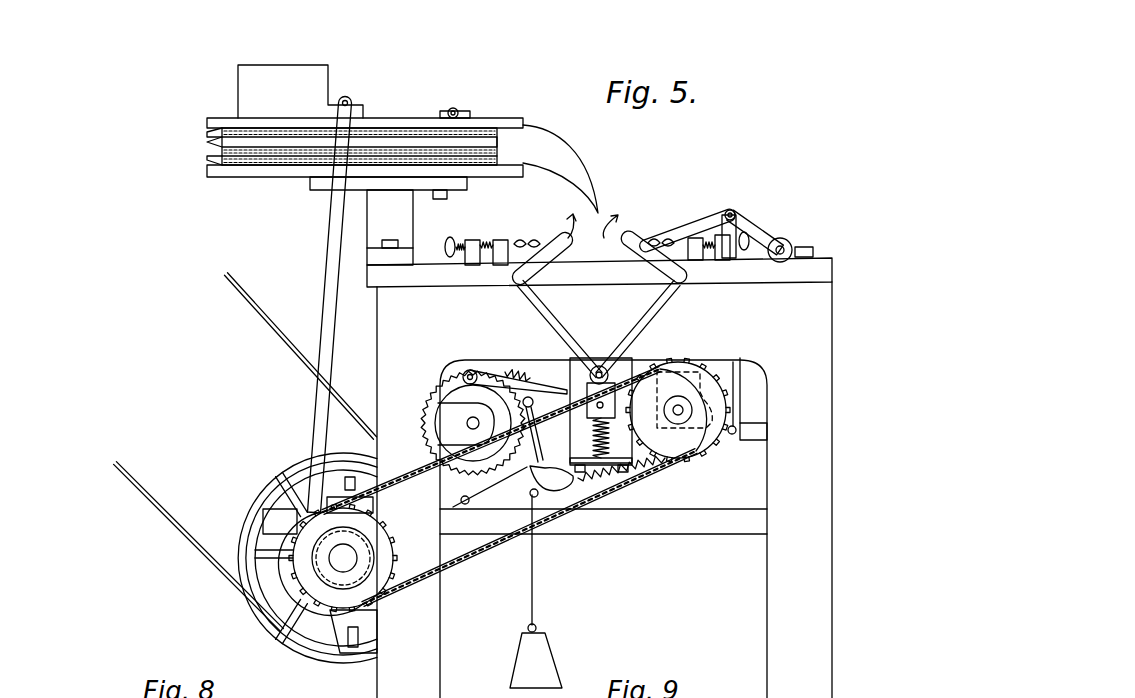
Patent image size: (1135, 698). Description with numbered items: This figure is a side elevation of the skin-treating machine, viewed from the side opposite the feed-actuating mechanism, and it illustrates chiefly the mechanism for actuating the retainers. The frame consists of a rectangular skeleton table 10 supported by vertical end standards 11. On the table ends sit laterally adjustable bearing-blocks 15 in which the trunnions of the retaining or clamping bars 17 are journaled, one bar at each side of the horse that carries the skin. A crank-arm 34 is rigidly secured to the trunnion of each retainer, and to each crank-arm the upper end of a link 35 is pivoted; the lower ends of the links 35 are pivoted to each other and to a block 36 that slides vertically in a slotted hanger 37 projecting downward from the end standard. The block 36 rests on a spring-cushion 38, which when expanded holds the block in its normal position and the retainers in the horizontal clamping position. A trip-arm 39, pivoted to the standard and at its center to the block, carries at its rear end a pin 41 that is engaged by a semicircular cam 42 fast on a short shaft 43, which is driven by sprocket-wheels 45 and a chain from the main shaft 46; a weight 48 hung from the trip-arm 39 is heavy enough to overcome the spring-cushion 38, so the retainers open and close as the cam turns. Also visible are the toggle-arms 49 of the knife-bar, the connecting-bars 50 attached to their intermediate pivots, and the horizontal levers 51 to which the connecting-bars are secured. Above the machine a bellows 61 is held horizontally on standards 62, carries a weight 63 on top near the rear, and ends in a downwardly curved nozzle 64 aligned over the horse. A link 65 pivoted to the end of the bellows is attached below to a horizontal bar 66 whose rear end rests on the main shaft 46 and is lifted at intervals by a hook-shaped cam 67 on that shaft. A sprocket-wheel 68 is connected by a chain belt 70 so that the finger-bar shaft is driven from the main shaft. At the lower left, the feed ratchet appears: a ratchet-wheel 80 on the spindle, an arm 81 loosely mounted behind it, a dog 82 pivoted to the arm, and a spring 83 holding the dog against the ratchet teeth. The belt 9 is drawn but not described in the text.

The belt 9 is at (295, 680).
The table 10 is at (599, 272).
The end standard 11 is at (604, 490).
The bearing-block 15 is at (597, 249).
The retaining or clamping bar 17 is at (594, 226).
The crank-arm 34 is at (599, 257).
The link 35 is at (552, 323).
The block 36 is at (601, 415).
The slotted hanger 37 is at (589, 377).
The spring-cushion 38 is at (592, 441).
The trip-arm 39 is at (518, 386).
The pin 41 is at (472, 371).
The semicircular cam 42 is at (466, 416).
The short shaft 43 is at (468, 423).
The sprocket-wheel 45 is at (473, 423).
The main shaft 46 is at (347, 556).
The weight 48 is at (536, 656).
The toggle-arm 49 is at (753, 228).
The connecting-bar 50 is at (738, 405).
The horizontal lever 51 is at (753, 431).
The bellows 61 is at (365, 146).
The standard 62 is at (390, 227).
The weight 63 is at (300, 91).
The nozzle 64 is at (560, 169).
The link 65 is at (326, 250).
The horizontal bar 66 is at (515, 521).
The hook-shaped cam 67 is at (352, 647).
The sprocket-wheel 68 is at (678, 409).
The chain belt 70 is at (560, 523).
The ratchet-wheel 80 is at (543, 429).
The arm 81 is at (551, 478).
The dog 82 is at (573, 488).
The spring 83 is at (524, 470).